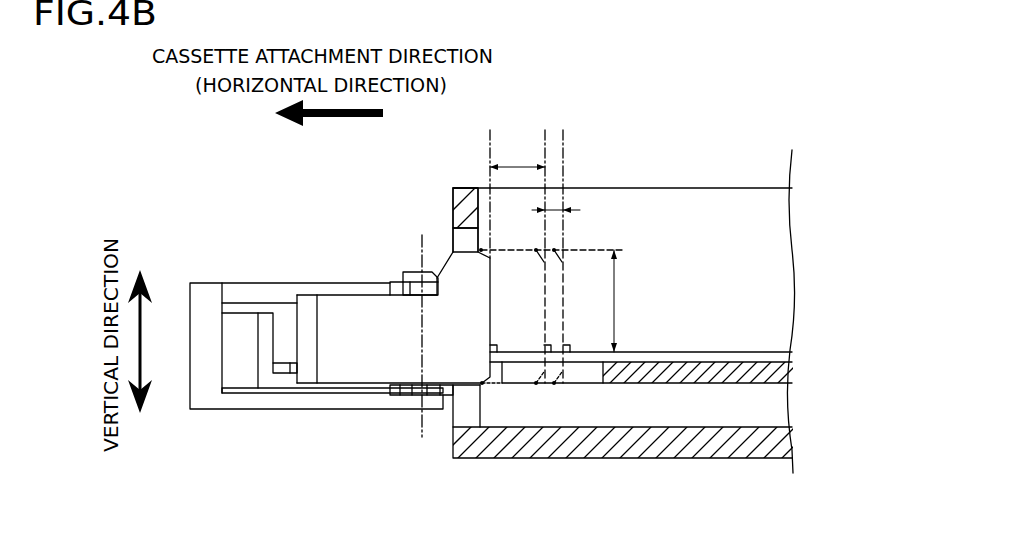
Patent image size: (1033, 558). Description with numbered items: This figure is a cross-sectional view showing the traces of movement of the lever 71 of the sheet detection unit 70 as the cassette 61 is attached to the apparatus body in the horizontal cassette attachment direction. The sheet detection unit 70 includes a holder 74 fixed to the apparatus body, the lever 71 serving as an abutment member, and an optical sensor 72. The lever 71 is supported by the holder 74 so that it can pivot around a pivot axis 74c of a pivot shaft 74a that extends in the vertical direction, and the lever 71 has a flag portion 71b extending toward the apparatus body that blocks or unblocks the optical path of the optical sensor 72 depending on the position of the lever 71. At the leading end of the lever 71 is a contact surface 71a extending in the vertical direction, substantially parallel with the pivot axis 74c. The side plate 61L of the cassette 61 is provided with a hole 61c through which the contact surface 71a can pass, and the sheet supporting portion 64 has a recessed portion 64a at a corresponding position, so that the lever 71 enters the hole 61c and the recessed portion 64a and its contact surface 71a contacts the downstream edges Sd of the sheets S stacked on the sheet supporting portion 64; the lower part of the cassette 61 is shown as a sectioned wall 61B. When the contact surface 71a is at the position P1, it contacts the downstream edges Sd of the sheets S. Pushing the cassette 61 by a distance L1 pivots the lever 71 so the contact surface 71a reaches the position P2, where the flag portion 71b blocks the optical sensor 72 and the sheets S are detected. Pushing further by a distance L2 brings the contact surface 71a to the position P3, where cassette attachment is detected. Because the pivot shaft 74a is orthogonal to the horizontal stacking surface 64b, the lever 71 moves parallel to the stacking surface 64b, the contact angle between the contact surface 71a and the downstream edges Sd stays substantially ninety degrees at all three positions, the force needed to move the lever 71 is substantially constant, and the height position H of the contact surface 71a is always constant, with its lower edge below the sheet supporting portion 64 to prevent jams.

The sheet detection unit 70 is at (203, 268).
The lever 71 is at (382, 277).
The contact surface 71a is at (505, 383).
The flag portion 71b is at (330, 353).
The optical sensor 72 is at (277, 368).
The holder 74 is at (395, 400).
The pivot shaft 74a is at (420, 273).
The pivot axis 74c is at (420, 400).
The cassette 61 is at (576, 333).
The side plate 61L is at (453, 210).
The hole 61c is at (460, 242).
The cassette bottom wall 61B is at (490, 450).
The sheet supporting portion 64 is at (652, 375).
The recessed portion 64a is at (580, 372).
The stacking surface 64b is at (723, 360).
The sheets S is at (653, 352).
The downstream edges Sd is at (490, 358).
The position P1 is at (573, 244).
The position P2 is at (545, 191).
The position P3 is at (493, 182).
The distance L1 is at (571, 205).
The distance L2 is at (517, 155).
The height position H is at (558, 301).